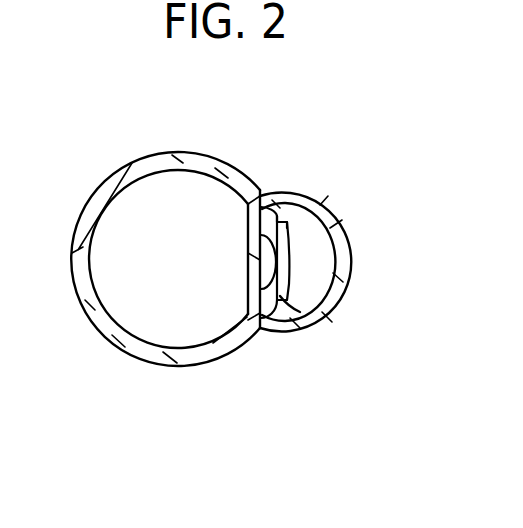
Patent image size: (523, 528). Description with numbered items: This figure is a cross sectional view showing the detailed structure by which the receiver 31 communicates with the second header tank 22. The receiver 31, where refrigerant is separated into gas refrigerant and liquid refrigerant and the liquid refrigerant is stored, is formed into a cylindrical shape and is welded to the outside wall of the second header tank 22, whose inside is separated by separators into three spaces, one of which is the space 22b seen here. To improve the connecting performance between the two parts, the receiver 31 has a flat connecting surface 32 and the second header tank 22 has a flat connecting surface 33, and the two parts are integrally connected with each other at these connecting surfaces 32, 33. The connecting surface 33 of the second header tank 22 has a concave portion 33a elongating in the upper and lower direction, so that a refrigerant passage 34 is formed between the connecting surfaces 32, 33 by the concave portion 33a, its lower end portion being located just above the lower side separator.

The second header tank 22 is at (338, 317).
The center space of the second header tank 22b is at (298, 302).
The receiver 31 is at (93, 327).
The flat connecting surface of the receiver 32 is at (253, 255).
The flat connecting surface of the second header tank 33 is at (290, 318).
The concave portion 33a is at (270, 212).
The refrigerant passage 34 is at (272, 262).